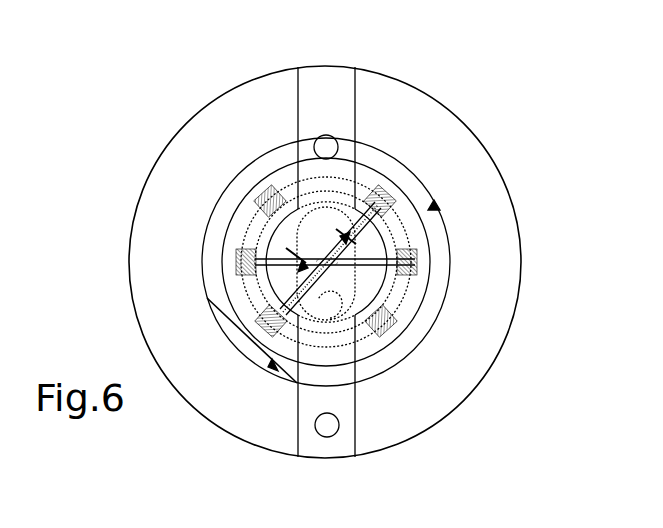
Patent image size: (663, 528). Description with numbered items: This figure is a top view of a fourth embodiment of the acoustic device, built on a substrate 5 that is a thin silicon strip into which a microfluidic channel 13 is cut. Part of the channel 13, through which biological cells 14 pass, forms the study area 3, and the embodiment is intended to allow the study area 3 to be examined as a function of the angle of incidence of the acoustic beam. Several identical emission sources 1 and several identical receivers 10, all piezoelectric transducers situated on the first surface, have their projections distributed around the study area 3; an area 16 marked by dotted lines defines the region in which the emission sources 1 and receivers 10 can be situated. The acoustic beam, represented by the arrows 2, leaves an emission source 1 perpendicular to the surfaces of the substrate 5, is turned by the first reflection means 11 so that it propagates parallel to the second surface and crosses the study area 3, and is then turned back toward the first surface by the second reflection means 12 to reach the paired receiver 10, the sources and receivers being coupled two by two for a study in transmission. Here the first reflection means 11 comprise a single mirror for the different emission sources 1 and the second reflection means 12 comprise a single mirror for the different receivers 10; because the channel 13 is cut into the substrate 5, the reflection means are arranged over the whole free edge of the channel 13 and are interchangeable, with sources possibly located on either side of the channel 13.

The emission source 1 is at (270, 195).
The arrows 2 is at (265, 318).
The study area 3 is at (353, 145).
The substrate 5 is at (162, 177).
The receiver 10 is at (378, 193).
The first reflection means 11 is at (283, 367).
The second reflection means 12 is at (438, 212).
The microfluidic channel 13 is at (327, 68).
The biological cells 14 is at (338, 426).
The area 16 is at (423, 290).